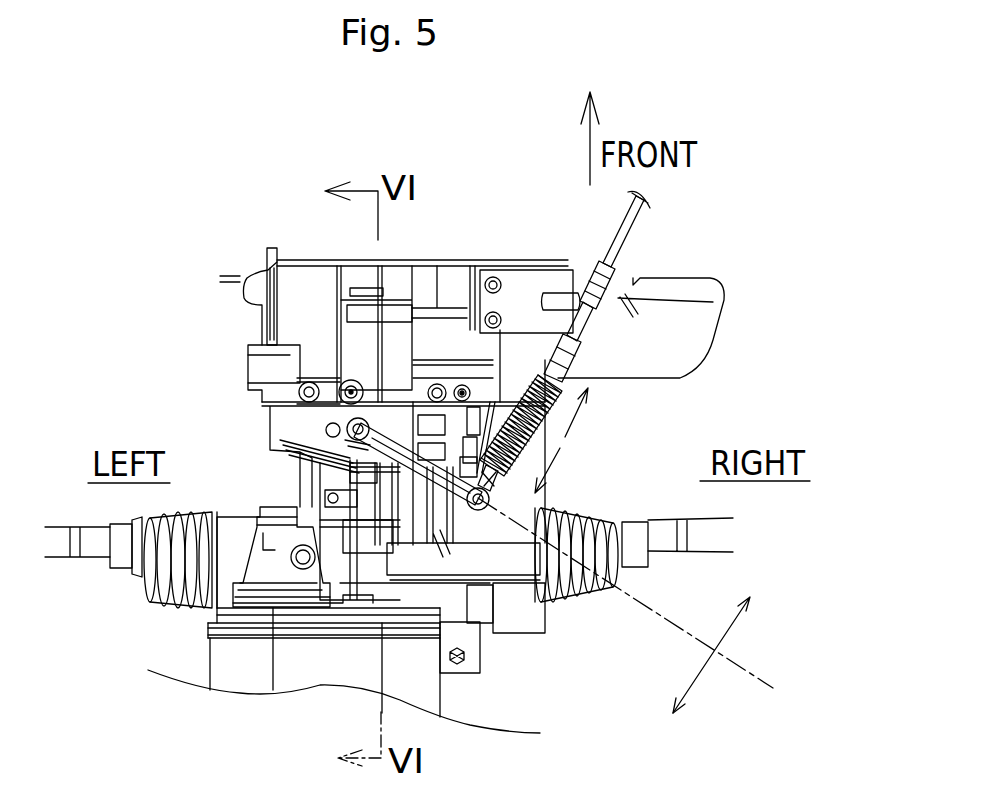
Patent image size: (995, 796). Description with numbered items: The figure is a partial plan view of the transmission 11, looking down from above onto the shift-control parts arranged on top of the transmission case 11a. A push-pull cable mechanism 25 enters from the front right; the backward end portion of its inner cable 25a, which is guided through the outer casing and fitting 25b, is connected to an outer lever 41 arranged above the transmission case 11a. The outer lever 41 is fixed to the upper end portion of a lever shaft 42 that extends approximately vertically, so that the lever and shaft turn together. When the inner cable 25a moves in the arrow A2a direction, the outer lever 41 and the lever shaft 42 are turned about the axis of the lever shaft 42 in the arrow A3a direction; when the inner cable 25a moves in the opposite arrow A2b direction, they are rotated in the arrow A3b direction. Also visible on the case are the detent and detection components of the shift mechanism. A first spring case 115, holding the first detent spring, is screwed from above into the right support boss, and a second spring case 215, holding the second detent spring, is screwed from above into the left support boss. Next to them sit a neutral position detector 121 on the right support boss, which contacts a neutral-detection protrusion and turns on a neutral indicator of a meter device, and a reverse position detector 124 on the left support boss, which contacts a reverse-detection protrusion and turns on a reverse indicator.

The transmission 11 is at (205, 226).
The transmission case 11a is at (260, 303).
The second spring case 215 is at (308, 382).
The reverse position detector 124 is at (353, 380).
The first spring case 115 is at (438, 385).
The neutral position detector 121 is at (463, 385).
The lever shaft 42 is at (348, 430).
The outer lever 41 is at (410, 466).
The push-pull cable mechanism 25 is at (589, 364).
The inner cable 25a is at (637, 232).
The cable outer casing / nut 25b is at (577, 338).
The arrow A2a direction A2a is at (570, 479).
The arrow A2b direction A2b is at (604, 416).
The arrow A3a direction A3a is at (705, 724).
The arrow A3b direction A3b is at (742, 655).